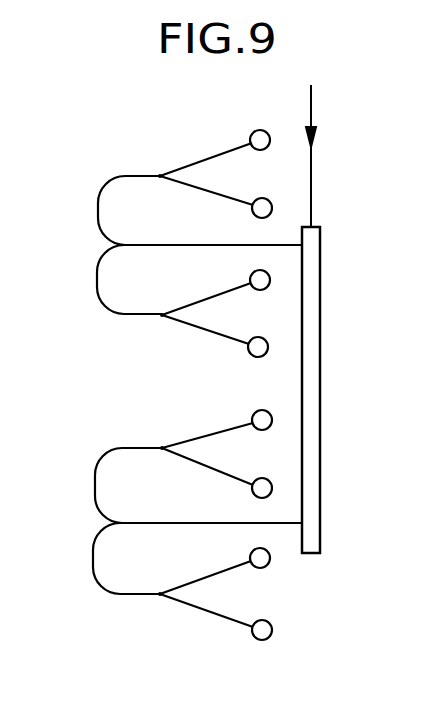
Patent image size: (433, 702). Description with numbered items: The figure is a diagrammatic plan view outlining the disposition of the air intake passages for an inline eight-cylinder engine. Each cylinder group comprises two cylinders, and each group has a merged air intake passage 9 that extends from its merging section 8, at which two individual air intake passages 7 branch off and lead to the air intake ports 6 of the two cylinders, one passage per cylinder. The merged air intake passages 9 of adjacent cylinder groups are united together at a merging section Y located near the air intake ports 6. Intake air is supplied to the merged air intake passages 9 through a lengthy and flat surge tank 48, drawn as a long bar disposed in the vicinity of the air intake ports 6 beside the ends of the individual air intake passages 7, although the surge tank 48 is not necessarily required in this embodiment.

The air intake port 6 is at (268, 133).
The individual air intake passage 7 is at (205, 160).
The merging section 8 is at (160, 174).
The merged air intake passage 9 is at (98, 212).
The surge tank 48 is at (320, 440).
The merging section Y is at (118, 245).